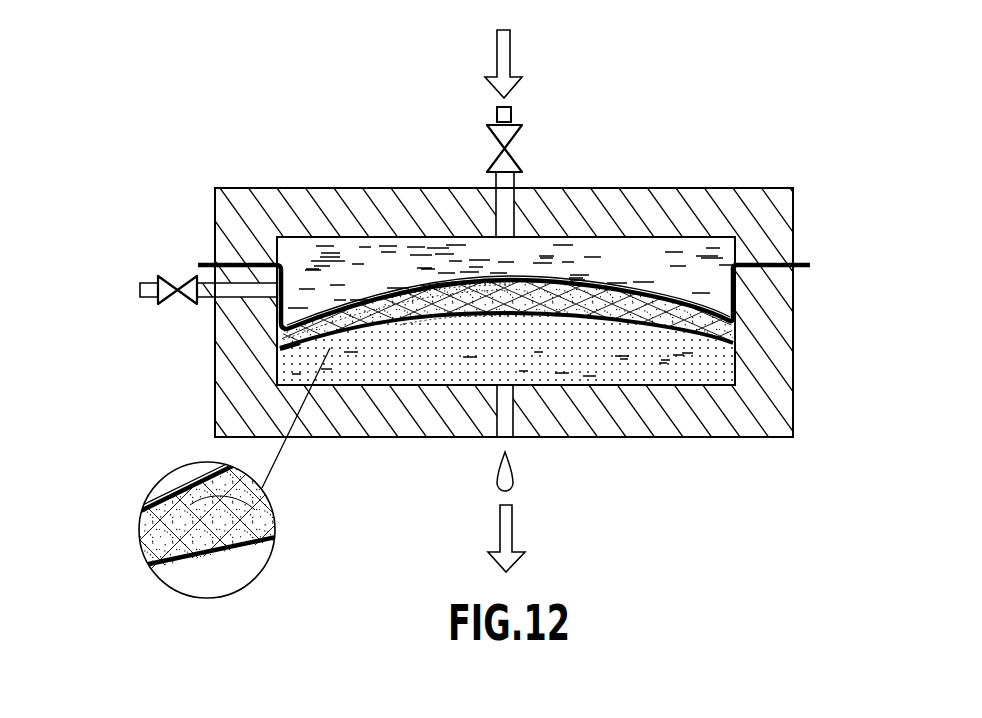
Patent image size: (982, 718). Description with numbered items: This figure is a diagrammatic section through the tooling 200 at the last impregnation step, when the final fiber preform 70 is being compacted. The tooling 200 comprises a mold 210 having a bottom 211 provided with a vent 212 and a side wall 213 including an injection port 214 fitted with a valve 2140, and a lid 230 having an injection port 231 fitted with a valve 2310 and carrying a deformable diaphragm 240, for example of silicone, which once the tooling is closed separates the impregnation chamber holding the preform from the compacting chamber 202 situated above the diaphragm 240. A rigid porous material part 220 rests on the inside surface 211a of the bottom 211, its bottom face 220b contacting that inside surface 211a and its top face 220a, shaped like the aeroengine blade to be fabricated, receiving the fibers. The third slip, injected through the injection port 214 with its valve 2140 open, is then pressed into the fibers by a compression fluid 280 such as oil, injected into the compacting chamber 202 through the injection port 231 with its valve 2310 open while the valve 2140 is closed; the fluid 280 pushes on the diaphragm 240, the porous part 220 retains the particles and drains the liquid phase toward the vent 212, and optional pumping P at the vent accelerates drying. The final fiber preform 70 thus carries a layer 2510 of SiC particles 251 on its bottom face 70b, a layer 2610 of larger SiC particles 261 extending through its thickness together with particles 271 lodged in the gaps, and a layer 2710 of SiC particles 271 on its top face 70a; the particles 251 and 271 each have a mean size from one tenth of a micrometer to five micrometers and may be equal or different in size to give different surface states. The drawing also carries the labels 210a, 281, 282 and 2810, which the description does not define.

The tooling 200 is at (215, 165).
The compacting chamber 202 is at (705, 247).
The mold 210 is at (797, 358).
The inner wall surface 210a is at (637, 302).
The bottom 211 is at (641, 420).
The inside surface 211a is at (407, 322).
The vent 212 is at (513, 418).
The side wall 213 is at (796, 272).
The injection port 214 is at (231, 294).
The valve 2140 is at (177, 273).
The porous material part 220 is at (684, 365).
The top face 220a is at (427, 283).
The bottom face 220b is at (314, 390).
The lid 230 is at (753, 213).
The injection port 231 is at (514, 180).
The valve 2310 is at (498, 147).
The deformable diaphragm 240 is at (277, 243).
The SiC particles 251 is at (375, 336).
The layer of SiC particles 2510 is at (236, 405).
The SiC particles 261 is at (526, 287).
The layer of SiC particles 2610 is at (324, 318).
The SiC particles 271 is at (212, 482).
The layer of SiC particles 2710 is at (205, 479).
The compression fluid 280 is at (613, 250).
The infiltrated resin 281 is at (522, 314).
The drained fluid 282 is at (495, 486).
The membrane 2810 is at (273, 338).
The final fiber preform 70 is at (392, 307).
The top face 70a is at (398, 290).
The bottom face 70b is at (440, 322).
The pumping P is at (507, 530).